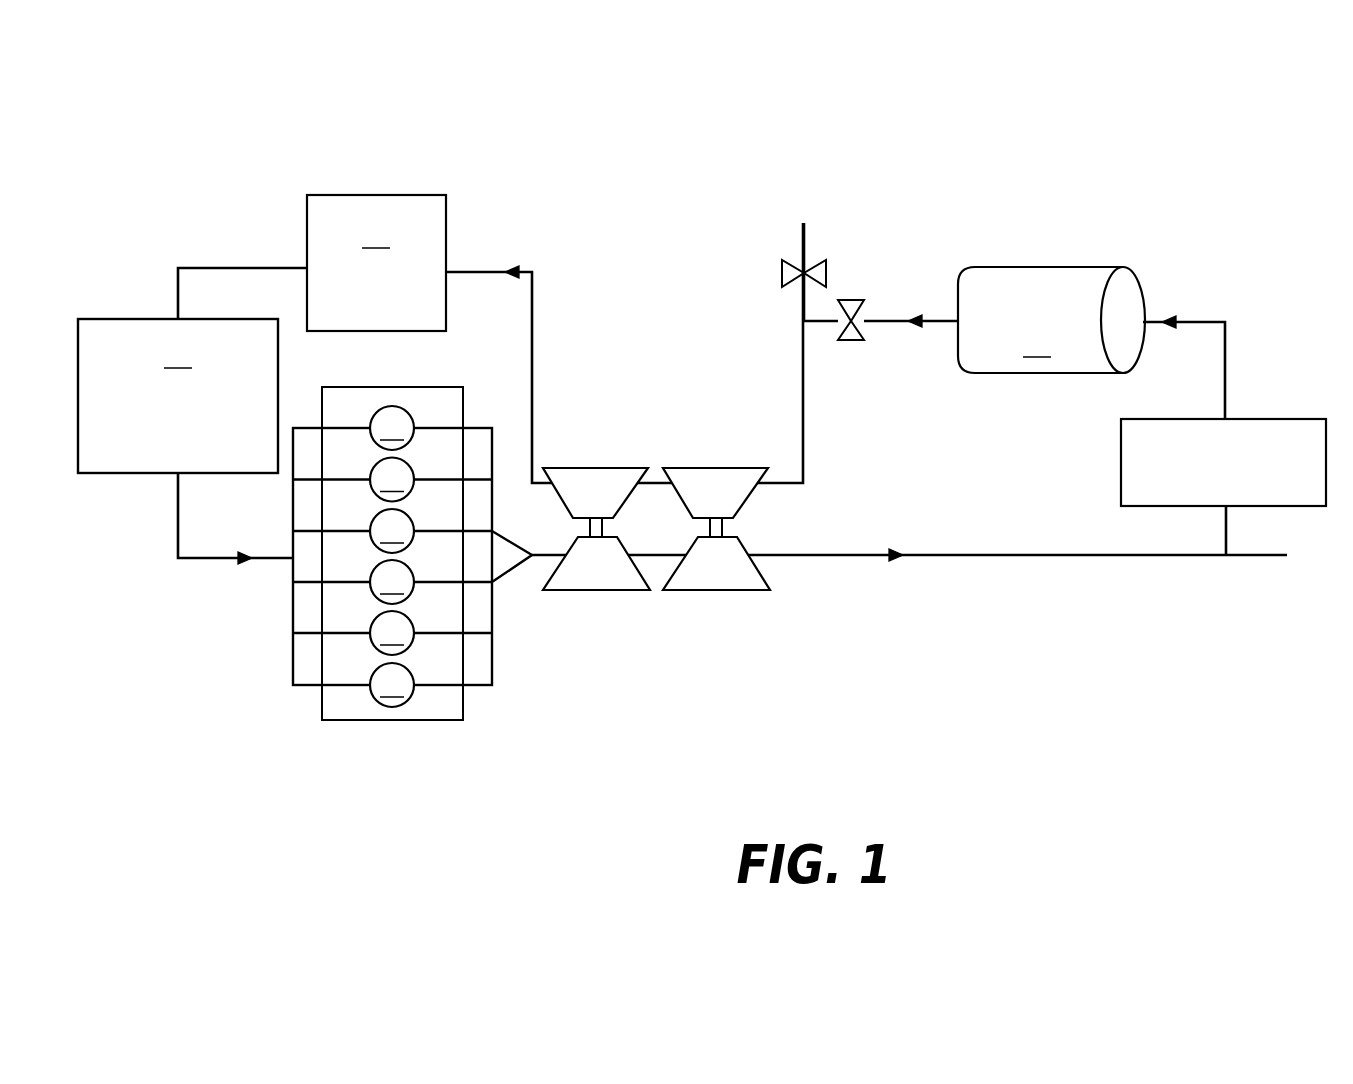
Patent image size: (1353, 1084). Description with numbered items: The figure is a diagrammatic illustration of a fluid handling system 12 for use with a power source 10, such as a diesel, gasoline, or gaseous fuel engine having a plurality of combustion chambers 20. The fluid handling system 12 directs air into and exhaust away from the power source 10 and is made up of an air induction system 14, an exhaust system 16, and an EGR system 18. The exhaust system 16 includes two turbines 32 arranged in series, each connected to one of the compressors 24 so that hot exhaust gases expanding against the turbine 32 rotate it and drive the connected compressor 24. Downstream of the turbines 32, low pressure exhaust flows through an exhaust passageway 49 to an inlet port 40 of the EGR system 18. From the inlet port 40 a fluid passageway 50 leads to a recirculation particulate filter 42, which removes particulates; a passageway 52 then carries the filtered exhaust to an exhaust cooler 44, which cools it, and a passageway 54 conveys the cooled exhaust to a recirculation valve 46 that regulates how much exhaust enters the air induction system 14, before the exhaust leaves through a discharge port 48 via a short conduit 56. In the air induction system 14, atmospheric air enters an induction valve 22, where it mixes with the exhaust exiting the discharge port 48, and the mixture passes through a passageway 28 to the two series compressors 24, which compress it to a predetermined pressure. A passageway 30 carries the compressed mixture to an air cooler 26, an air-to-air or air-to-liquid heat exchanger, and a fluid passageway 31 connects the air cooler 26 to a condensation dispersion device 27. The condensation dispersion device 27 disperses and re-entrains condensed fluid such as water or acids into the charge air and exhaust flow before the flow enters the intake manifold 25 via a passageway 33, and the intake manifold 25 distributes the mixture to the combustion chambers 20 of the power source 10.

The power source 10 is at (443, 720).
The fluid handling system 12 is at (1001, 672).
The air induction system 14 is at (252, 686).
The exhaust system 16 is at (532, 686).
The EGR system 18 is at (1251, 223).
The combustion chamber 20 is at (392, 556).
The induction valve 22 is at (782, 267).
The compressor 24 is at (592, 467).
The intake manifold 25 is at (293, 685).
The air cooler 26 is at (376, 263).
The condensation dispersion device 27 is at (178, 396).
The passageway 28 is at (805, 455).
The passageway 30 is at (532, 318).
The fluid passageway 31 is at (224, 268).
The turbine 32 is at (600, 590).
The passageway 33 is at (177, 548).
The inlet port 40 is at (1232, 553).
The recirculation particulate filter 42 is at (1223, 462).
The exhaust cooler 44 is at (1051, 320).
The recirculation valve 46 is at (862, 338).
The discharge port 48 is at (805, 327).
The exhaust passageway 49 is at (835, 557).
The fluid passageway 50 is at (1223, 522).
The passageway 52 is at (1225, 322).
The passageway 54 is at (927, 323).
The conduit 56 is at (833, 320).